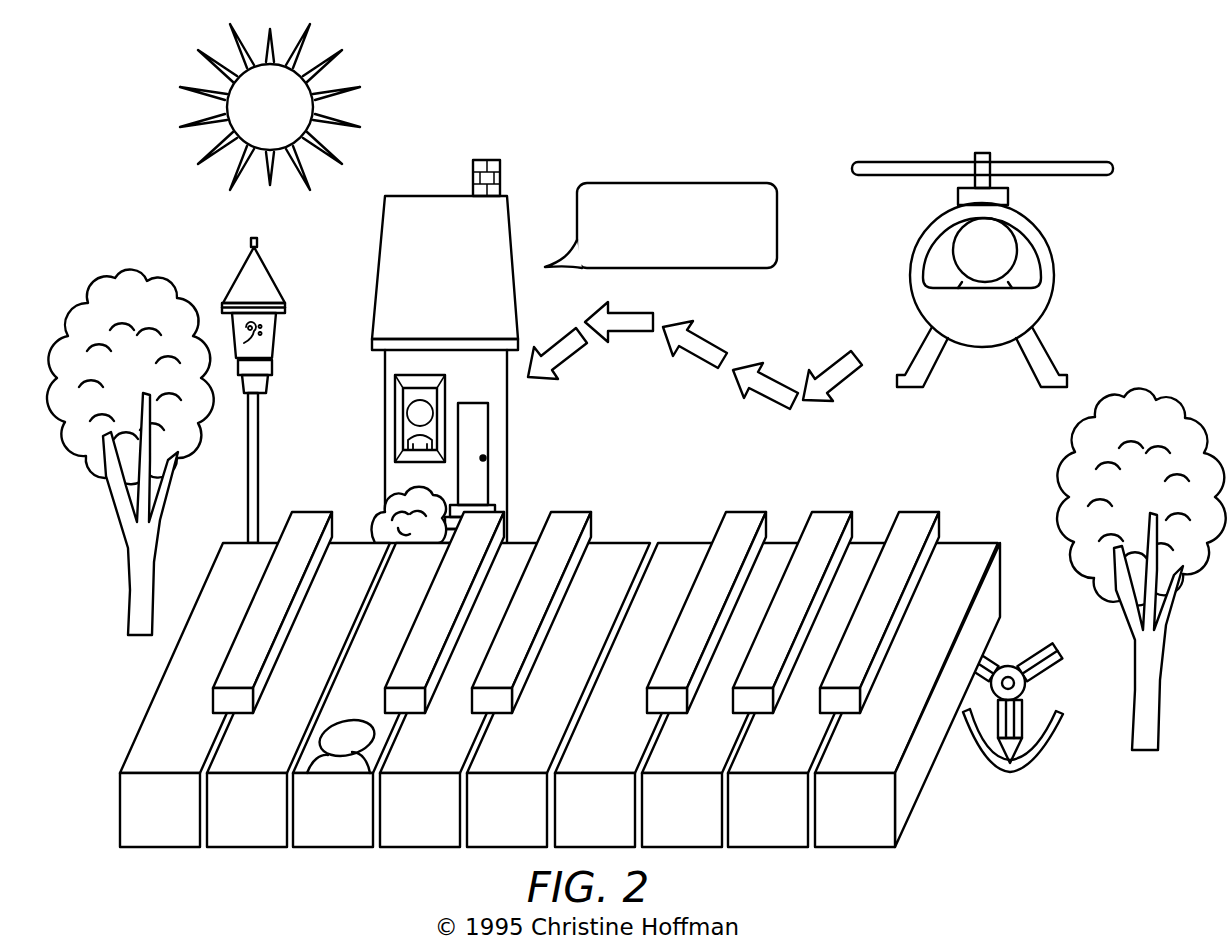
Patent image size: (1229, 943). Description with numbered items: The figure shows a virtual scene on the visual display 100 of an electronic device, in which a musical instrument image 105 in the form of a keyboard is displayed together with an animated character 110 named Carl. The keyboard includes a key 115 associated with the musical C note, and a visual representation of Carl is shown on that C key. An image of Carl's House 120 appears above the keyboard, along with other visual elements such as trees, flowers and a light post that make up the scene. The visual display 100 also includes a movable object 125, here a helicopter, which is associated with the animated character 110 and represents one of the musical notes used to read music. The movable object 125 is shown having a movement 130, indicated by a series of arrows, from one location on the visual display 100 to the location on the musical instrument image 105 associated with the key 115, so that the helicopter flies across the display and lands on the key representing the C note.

The visual display 100 is at (1113, 120).
The musical instrument image 105 is at (932, 797).
The animated character 110 is at (1018, 242).
The key 115 is at (337, 848).
The Carl's House 120 is at (427, 196).
The movable object 125 is at (918, 237).
The movement 130 is at (675, 380).